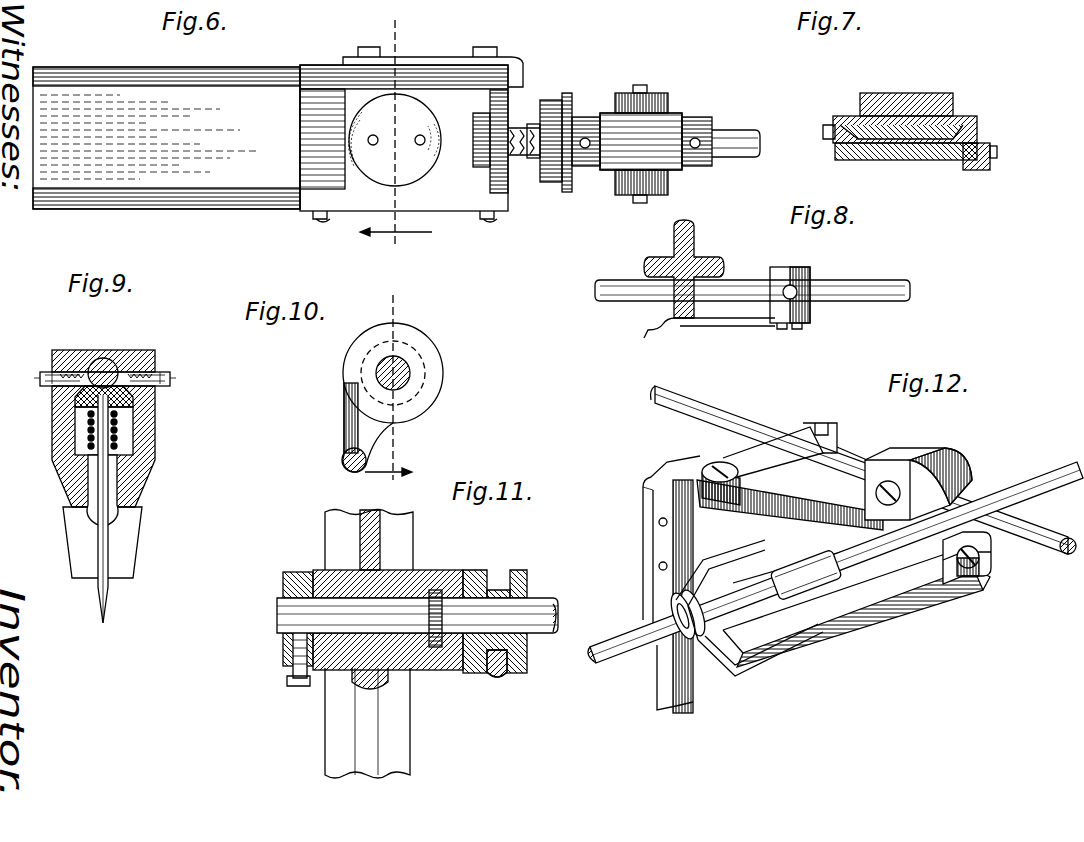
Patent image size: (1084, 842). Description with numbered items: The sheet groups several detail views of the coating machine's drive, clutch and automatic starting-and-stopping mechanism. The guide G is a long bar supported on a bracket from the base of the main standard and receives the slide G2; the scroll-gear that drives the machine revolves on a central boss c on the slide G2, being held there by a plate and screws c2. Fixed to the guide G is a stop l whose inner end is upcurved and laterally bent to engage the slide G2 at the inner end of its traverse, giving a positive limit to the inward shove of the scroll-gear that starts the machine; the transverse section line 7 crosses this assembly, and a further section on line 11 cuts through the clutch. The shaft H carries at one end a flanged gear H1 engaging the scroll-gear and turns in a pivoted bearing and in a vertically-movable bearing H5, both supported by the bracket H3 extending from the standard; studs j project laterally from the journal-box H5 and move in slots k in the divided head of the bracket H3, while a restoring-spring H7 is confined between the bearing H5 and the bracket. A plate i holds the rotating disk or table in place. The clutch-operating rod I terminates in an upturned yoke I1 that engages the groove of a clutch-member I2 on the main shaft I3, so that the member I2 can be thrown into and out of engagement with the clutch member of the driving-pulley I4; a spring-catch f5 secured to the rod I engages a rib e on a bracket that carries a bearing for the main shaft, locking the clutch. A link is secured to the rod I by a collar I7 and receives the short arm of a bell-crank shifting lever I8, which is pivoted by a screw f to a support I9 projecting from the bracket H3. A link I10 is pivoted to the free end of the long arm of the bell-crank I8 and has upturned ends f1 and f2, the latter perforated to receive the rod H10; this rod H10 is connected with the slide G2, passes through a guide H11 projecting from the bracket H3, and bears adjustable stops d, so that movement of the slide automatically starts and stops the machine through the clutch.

In FIG. 6, the guide G is at (166, 138).
In FIG. 7, the guide G is at (918, 156).
In FIG. 6, the slide G2 is at (332, 95).
In FIG. 7, the slide G2 is at (975, 118).
In FIG. 6, the central boss c is at (395, 140).
In FIG. 7, the central boss c is at (935, 96).
In FIG. 6, the stop l is at (432, 58).
In FIG. 6, the section line 7 is at (396, 134).
In FIG. 6, the flanged gear H1 is at (553, 100).
In FIG. 6, the bracket H3 is at (658, 113).
In FIG. 9, the bracket H3 is at (140, 545).
In FIG. 6, the vertically-movable bearing H5 is at (690, 135).
In FIG. 9, the vertically-movable bearing H5 is at (122, 352).
In FIG. 7, the plate i is at (994, 163).
In FIG. 8, the clutch-operating rod I is at (872, 291).
In FIG. 10, the clutch-operating rod I is at (342, 462).
In FIG. 11, the clutch-operating rod I is at (544, 635).
In FIG. 12, the clutch-operating rod I is at (733, 418).
In FIG. 8, the rib e is at (672, 310).
In FIG. 8, the spring-catch f5 is at (742, 322).
In FIG. 9, the studs j is at (40, 384).
In FIG. 9, the slots k is at (152, 394).
In FIG. 9, the restoring-spring H7 is at (130, 434).
In FIG. 9, the shaft H is at (102, 359).
In FIG. 10, the clutch-member I2 is at (442, 378).
In FIG. 11, the clutch-member I2 is at (526, 578).
In FIG. 10, the main shaft I3 is at (405, 383).
In FIG. 10, the section line 11 is at (388, 387).
In FIG. 11, the driving-pulley I4 is at (400, 738).
In FIG. 11, the upturned yoke I1 is at (496, 674).
In FIG. 12, the guide H11 is at (667, 688).
In FIG. 12, the support I9 is at (647, 527).
In FIG. 12, the bell-crank shifting lever I8 is at (770, 493).
In FIG. 12, the screw f is at (714, 471).
In FIG. 12, the screws c2 is at (795, 450).
In FIG. 12, the collar I7 is at (942, 462).
In FIG. 12, the rod H10 is at (1018, 482).
In FIG. 12, the adjustable stop d is at (670, 606).
In FIG. 12, the upturned end f2 is at (732, 636).
In FIG. 12, the link I10 is at (901, 600).
In FIG. 12, the upturned end f1 is at (994, 562).